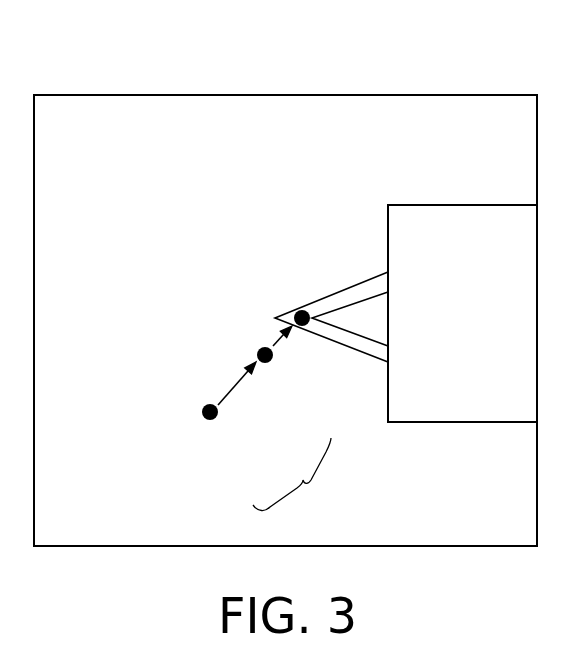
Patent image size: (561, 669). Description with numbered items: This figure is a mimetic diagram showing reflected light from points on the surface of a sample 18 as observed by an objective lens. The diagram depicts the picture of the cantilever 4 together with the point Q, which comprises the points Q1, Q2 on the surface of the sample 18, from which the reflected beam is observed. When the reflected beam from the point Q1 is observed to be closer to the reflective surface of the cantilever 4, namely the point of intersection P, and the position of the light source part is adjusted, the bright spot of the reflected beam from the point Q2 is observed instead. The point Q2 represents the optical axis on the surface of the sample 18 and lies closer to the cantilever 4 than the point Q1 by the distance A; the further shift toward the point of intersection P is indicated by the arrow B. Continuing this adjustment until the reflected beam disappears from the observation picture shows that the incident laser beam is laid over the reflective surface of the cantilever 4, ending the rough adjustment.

The sample 18 is at (122, 113).
The cantilever 4 is at (357, 288).
The point of intersection P is at (300, 311).
The point Q1 is at (219, 417).
The point Q2 is at (283, 365).
The distance A is at (235, 383).
The second movement B is at (276, 337).
The point Q is at (298, 478).